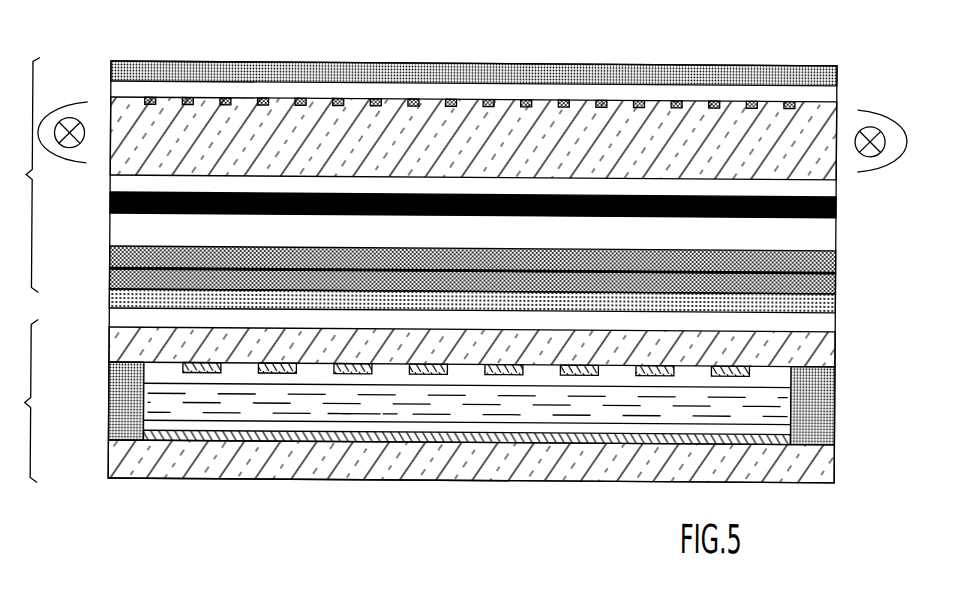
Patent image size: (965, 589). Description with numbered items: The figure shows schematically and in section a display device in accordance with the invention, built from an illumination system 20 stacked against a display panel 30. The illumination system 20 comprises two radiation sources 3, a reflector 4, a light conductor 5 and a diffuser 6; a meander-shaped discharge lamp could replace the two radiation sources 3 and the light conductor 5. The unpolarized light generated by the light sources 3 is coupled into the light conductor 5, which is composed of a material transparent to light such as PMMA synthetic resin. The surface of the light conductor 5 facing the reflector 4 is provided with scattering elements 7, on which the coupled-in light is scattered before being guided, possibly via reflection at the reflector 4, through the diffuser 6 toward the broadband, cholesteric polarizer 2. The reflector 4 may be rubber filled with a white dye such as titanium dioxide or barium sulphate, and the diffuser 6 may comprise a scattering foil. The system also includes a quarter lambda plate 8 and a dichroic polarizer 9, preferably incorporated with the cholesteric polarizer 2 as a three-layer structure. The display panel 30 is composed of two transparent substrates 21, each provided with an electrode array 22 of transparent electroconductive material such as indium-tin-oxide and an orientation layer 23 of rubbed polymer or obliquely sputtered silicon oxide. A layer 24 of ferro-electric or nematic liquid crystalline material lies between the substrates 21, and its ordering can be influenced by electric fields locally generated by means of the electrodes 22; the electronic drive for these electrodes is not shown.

The broadband cholesteric polarizer 2 is at (838, 257).
The light source 3 is at (67, 118).
The reflector 4 is at (745, 71).
The light conductor 5 is at (822, 110).
The diffuser 6 is at (838, 200).
The scattering elements 7 is at (602, 98).
The quarter lambda plate 8 is at (838, 282).
The dichroic polarizer 9 is at (838, 300).
The illumination system 20 is at (22, 174).
The transparent substrates 21 is at (822, 352).
The electrode array 22 is at (760, 370).
The orientation layer 23 is at (833, 405).
The layer of liquid crystalline material 24 is at (385, 408).
The display panel 30 is at (20, 400).